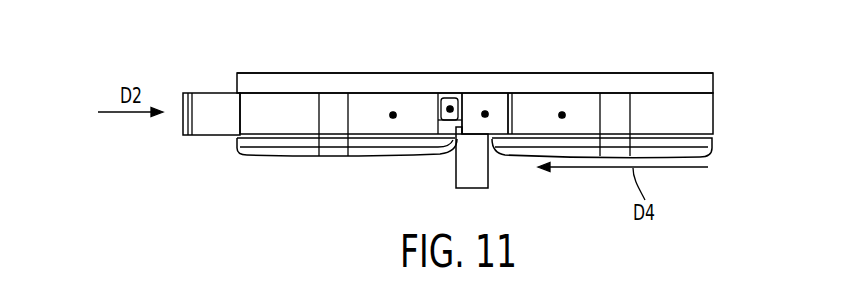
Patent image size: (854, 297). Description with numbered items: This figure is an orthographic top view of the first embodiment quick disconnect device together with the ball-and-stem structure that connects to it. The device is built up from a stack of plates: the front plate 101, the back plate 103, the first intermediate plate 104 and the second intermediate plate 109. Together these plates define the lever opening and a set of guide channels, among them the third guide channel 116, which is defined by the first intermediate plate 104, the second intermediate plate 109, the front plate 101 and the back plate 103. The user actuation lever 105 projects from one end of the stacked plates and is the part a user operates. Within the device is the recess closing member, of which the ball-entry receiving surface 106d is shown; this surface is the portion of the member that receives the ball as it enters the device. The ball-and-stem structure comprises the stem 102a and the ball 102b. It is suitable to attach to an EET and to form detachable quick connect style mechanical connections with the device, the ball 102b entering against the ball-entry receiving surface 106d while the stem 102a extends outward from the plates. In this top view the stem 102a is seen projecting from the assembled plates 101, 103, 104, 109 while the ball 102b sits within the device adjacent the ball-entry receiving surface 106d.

The front plate 101 is at (395, 156).
The stem 102a is at (488, 175).
The ball 102b is at (450, 106).
The back plate 103 is at (713, 84).
The first intermediate plate 104 is at (665, 92).
The user actuation lever 105 is at (203, 136).
The ball-entry receiving surface 106d is at (485, 111).
The second intermediate plate 109 is at (282, 92).
The third guide channel 116 is at (393, 112).